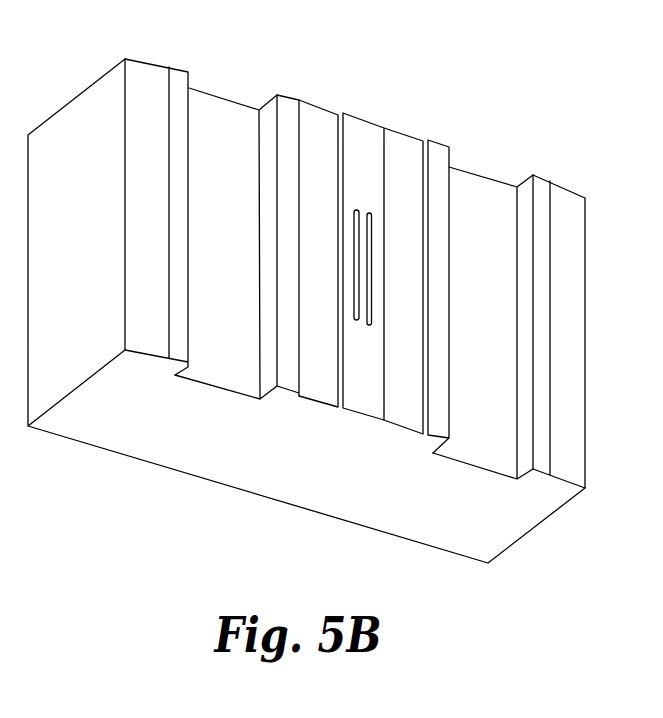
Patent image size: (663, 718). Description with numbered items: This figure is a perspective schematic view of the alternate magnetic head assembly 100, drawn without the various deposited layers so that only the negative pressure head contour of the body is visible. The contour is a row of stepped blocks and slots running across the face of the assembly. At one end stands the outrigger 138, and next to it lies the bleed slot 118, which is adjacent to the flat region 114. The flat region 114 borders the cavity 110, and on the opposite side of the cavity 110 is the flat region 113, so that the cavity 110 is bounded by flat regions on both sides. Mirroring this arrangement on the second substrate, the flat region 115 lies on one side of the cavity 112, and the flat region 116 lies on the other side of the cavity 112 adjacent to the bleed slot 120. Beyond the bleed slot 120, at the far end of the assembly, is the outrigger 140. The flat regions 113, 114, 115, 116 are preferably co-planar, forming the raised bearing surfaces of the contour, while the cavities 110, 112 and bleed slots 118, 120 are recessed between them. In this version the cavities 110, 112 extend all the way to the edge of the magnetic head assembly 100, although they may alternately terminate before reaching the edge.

The magnetic head assembly 100 is at (527, 107).
The outrigger 138 is at (145, 70).
The bleed slot 118 is at (222, 108).
The flat region 114 is at (287, 108).
The cavity 110 is at (317, 122).
The cavity 112 is at (402, 145).
The flat region 113 is at (352, 312).
The flat region 115 is at (366, 311).
The flat region 116 is at (440, 155).
The bleed slot 120 is at (501, 190).
The outrigger 140 is at (571, 205).